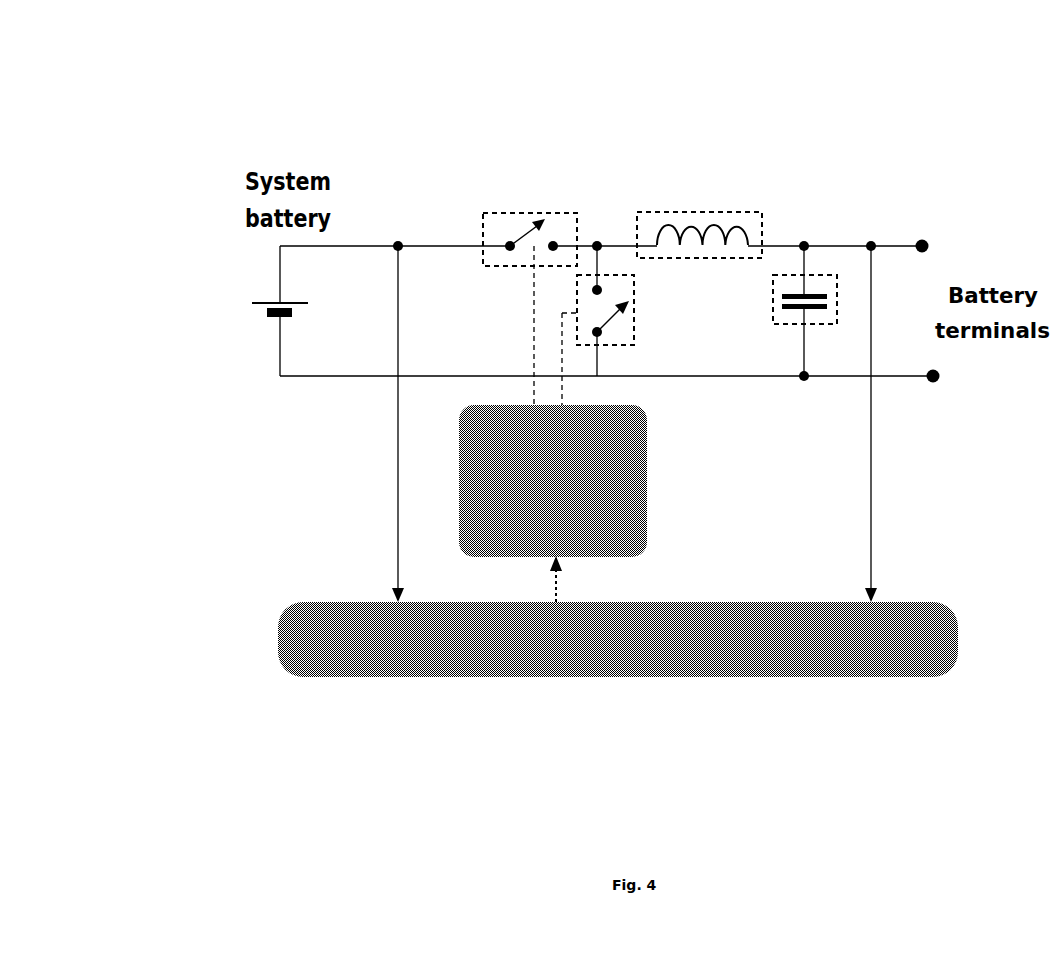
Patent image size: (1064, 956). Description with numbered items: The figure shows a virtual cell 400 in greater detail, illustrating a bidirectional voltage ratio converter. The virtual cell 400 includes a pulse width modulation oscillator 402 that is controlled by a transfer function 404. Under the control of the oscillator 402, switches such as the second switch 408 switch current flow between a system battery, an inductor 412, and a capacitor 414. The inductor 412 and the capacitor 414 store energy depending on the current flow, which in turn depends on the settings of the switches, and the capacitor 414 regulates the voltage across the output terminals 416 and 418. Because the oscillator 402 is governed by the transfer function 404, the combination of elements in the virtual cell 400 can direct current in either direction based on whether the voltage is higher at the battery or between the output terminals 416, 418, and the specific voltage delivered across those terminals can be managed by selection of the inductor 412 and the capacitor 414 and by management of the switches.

The virtual cell 400 is at (114, 97).
The pulse width modulation (PWM) oscillator 402 is at (512, 212).
The transfer function 404 is at (485, 602).
The second switch 408 is at (634, 297).
The inductor 412 is at (683, 212).
The capacitor 414 is at (797, 325).
The output terminal 416 is at (908, 243).
The output terminal 418 is at (925, 378).